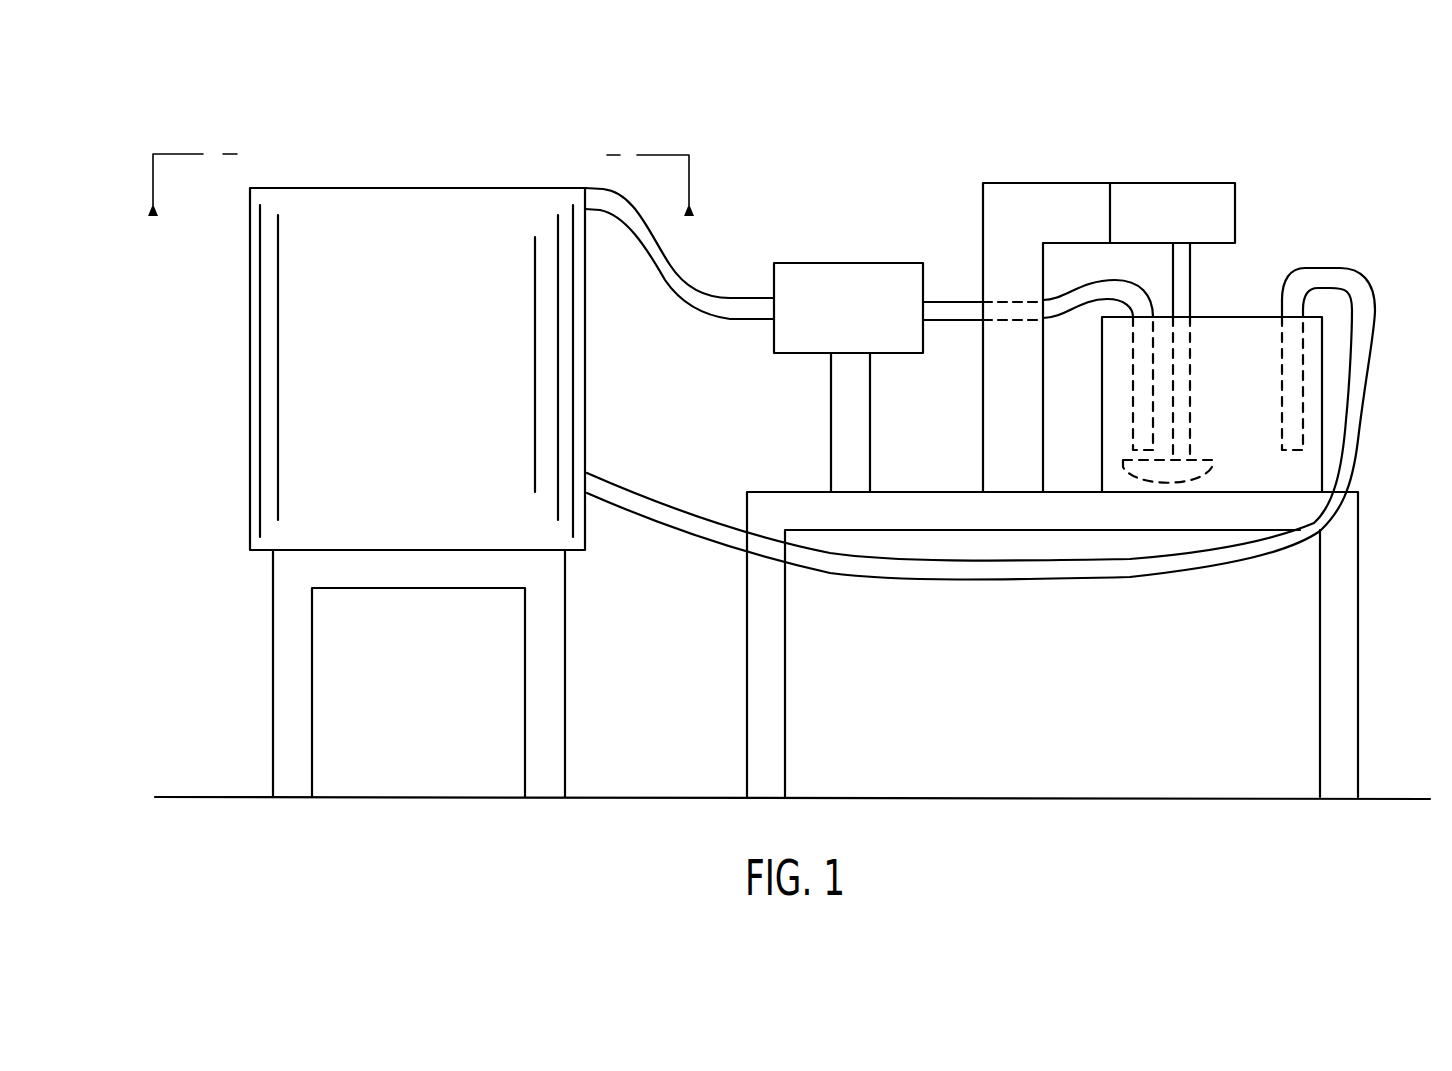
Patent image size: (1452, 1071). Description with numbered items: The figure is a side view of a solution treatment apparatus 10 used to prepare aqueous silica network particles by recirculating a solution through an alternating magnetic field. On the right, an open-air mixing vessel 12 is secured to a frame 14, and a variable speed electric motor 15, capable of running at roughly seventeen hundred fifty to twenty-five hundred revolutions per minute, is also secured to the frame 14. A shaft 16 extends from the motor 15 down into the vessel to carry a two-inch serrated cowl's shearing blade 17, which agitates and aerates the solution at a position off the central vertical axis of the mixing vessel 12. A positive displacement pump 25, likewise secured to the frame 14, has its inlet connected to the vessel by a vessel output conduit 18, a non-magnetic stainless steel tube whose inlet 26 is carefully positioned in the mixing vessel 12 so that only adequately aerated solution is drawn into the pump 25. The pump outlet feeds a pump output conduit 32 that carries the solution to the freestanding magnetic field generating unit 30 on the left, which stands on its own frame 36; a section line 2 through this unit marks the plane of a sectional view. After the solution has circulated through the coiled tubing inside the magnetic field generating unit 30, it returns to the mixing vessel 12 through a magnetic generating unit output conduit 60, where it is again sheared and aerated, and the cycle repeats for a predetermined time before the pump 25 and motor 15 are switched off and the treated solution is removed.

The solution treatment apparatus 10 is at (1335, 118).
The section line 2- 2 is at (422, 162).
The open-air mixing vessel 12 is at (1258, 300).
The frame 14 is at (1346, 621).
The variable speed electric motor 15 is at (1172, 205).
The shaft 16 is at (1190, 280).
The shearing blade 17 is at (1207, 478).
The vessel output conduit 18 is at (958, 292).
The positive displacement pump 25 is at (873, 262).
The inlet 26 is at (1152, 443).
The magnetic field generating unit 30 is at (478, 160).
The pump output conduit 32 is at (703, 290).
The frame 36 is at (258, 603).
The magnetic generating unit output conduit 60 is at (660, 527).